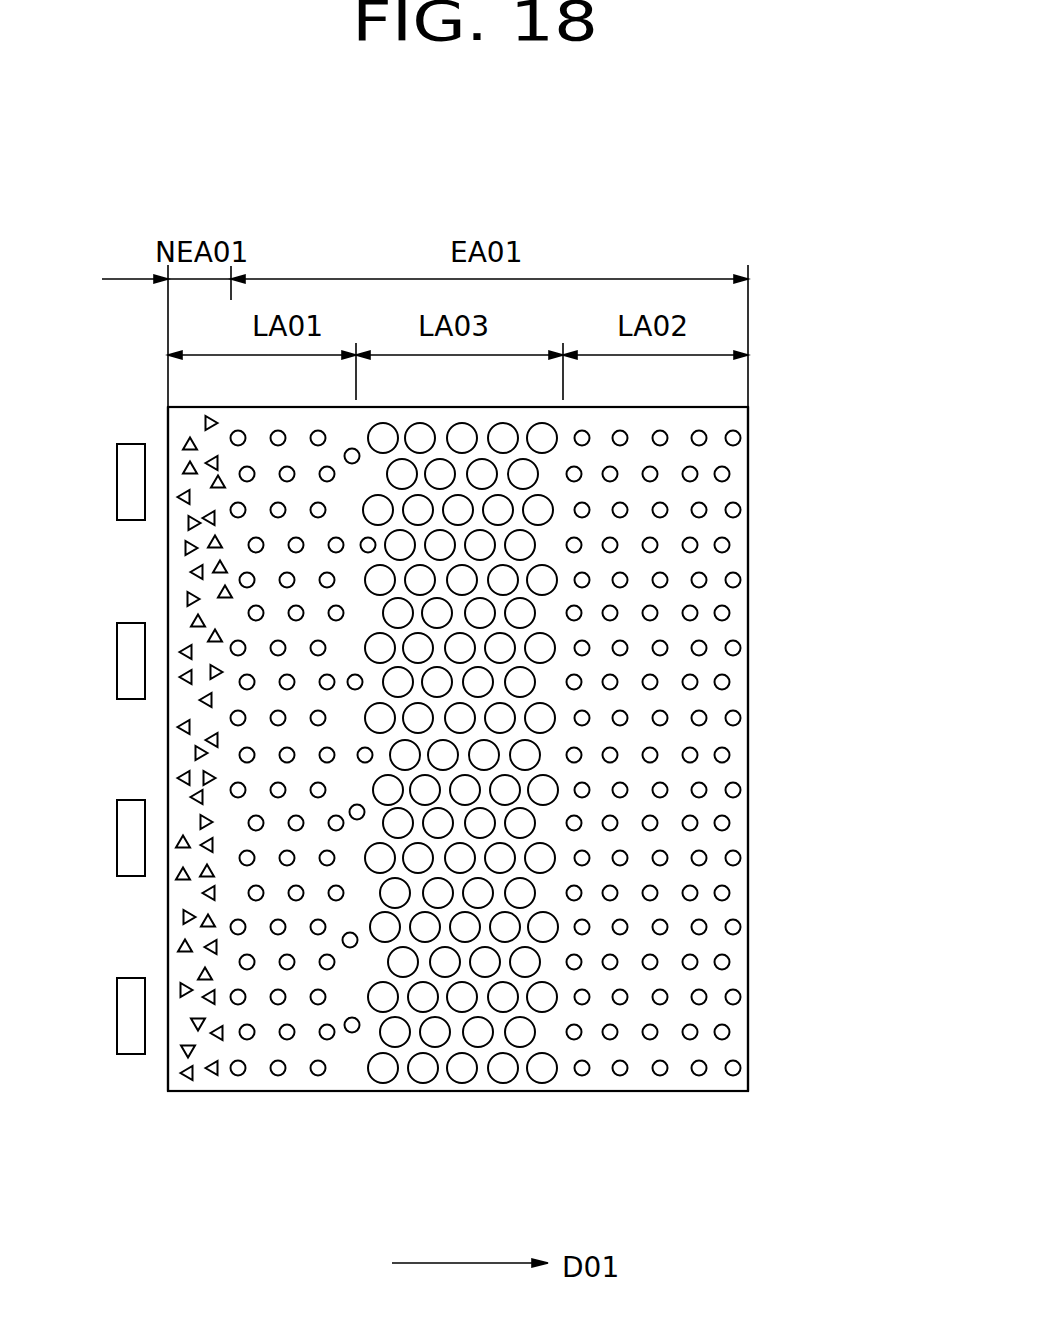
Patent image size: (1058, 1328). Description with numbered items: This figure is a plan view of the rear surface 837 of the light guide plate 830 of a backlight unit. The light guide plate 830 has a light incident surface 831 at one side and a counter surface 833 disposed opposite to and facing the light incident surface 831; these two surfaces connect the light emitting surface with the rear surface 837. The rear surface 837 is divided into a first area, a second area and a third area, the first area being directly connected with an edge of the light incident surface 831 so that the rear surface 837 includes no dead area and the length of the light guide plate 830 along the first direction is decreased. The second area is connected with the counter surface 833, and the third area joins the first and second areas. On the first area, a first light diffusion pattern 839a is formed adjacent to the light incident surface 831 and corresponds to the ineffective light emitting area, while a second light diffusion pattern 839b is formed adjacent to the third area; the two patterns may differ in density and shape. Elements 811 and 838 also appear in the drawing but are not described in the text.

The pads 811 is at (128, 1045).
The light guide plate 830 is at (772, 605).
The light incident surface 831 is at (168, 748).
The counter surface 833 is at (748, 687).
The rear surface 837 is at (617, 1070).
The large pixel openings 838 is at (418, 1070).
The first light diffusion pattern 839a is at (215, 1068).
The second light diffusion pattern 839b is at (320, 1070).